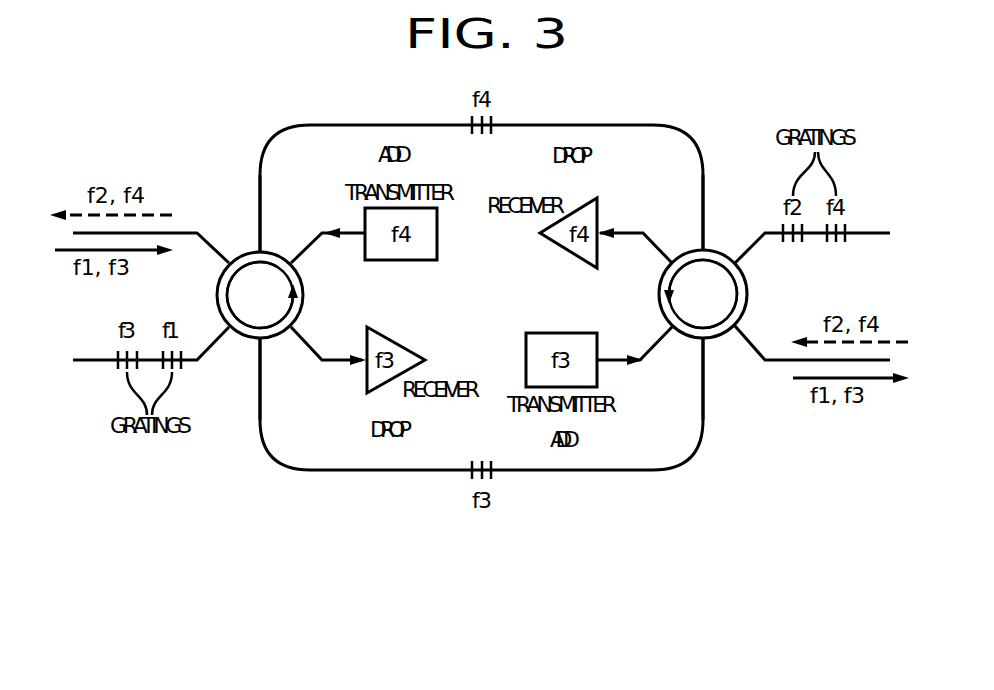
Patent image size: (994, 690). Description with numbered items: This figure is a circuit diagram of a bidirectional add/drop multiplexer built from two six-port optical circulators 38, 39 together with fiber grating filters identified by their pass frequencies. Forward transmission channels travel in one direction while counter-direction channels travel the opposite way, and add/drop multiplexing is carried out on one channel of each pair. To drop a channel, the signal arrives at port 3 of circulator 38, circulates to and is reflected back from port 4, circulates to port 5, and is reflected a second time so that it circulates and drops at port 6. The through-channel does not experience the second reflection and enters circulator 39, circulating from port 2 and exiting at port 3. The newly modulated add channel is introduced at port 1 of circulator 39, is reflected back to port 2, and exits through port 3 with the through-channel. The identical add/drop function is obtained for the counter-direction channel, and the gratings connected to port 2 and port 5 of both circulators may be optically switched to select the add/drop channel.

The circulator 38 is at (303, 297).
The circulator 39 is at (665, 298).
The port p1 1 is at (486, 296).
The port p2 2 is at (494, 297).
The port p3 3 is at (481, 292).
The port p4 4 is at (481, 300).
The port p5 5 is at (494, 297).
The port p6 6 is at (487, 294).